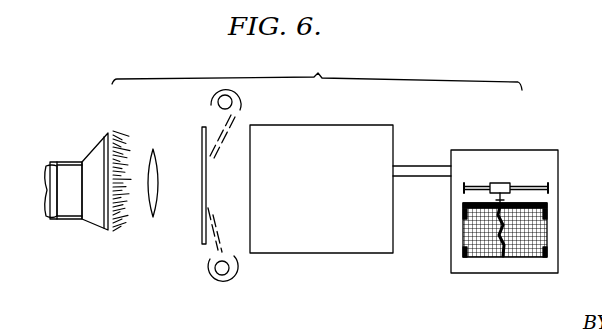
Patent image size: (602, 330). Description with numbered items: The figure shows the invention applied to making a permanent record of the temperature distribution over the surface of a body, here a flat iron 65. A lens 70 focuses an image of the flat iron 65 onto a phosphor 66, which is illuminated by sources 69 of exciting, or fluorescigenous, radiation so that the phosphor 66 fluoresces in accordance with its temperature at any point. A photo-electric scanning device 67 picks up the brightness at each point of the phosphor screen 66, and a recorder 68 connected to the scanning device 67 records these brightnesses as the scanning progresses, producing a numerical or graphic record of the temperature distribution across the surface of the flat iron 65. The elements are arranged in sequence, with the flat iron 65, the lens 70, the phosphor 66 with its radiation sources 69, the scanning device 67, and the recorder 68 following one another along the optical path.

The flat iron 65 is at (101, 140).
The phosphor 66 is at (202, 132).
The photo-electric scanning device 67 is at (327, 140).
The recorder 68 is at (498, 152).
The sources of exciting radiation 69 is at (214, 263).
The lens 70 is at (149, 214).